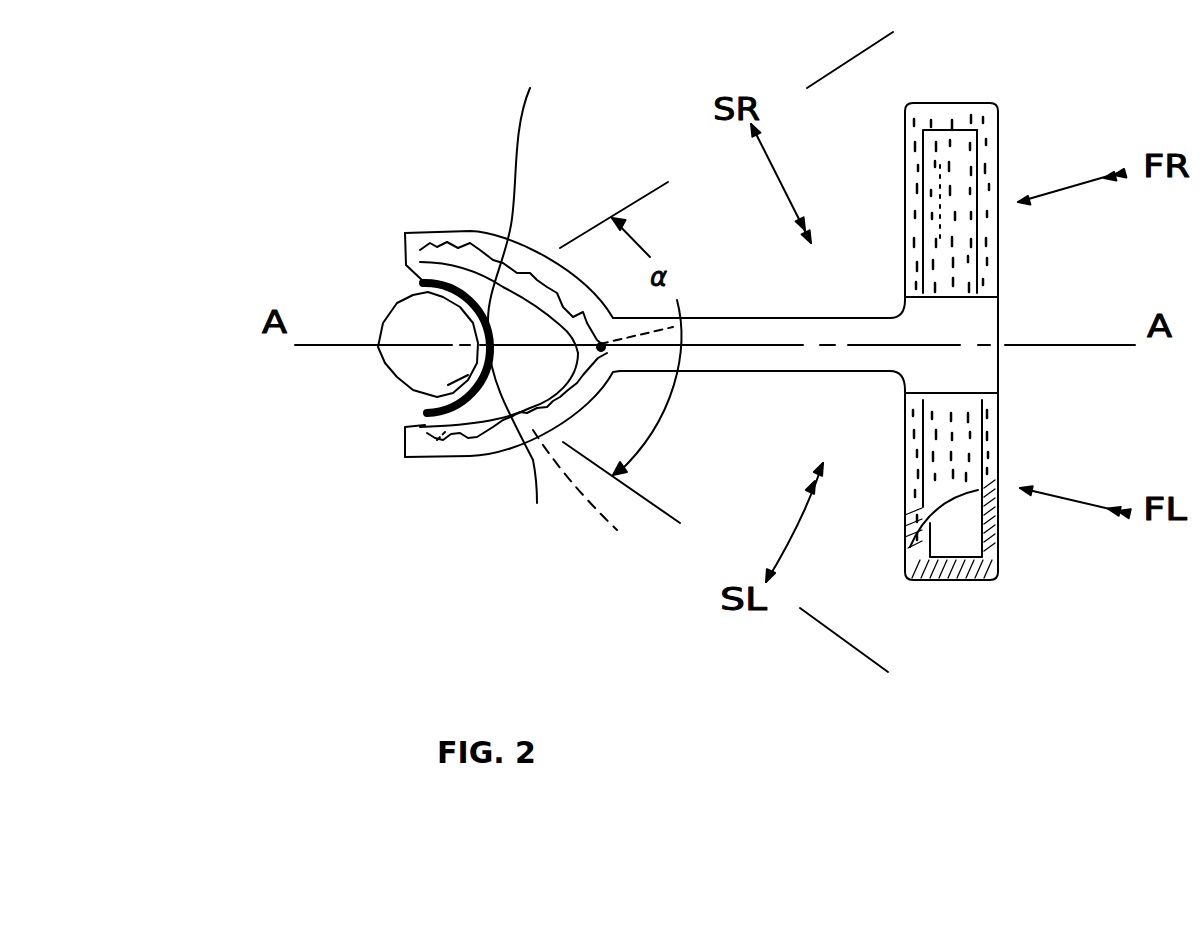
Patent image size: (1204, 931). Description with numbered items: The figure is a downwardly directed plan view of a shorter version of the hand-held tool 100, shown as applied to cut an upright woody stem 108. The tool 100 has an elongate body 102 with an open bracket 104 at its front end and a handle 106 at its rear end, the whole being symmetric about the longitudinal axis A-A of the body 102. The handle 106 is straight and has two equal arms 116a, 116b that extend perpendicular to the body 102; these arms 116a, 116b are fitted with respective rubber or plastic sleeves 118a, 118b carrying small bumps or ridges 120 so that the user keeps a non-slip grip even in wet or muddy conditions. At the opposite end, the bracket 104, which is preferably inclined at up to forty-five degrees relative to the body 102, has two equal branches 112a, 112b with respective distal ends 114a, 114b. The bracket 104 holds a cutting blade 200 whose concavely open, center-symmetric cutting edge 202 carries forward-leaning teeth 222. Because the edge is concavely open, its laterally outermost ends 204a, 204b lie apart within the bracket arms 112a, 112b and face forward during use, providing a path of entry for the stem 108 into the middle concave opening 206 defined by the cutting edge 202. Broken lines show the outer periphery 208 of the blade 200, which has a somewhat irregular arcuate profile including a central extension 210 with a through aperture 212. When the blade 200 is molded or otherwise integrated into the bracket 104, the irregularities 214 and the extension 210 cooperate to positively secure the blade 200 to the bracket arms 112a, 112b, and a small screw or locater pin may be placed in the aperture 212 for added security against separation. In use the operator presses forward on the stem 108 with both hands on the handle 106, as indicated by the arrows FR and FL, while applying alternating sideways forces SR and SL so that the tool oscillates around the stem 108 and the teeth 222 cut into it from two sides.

The hand-held tool 100 is at (497, 172).
The elongate body 102 is at (823, 318).
The open bracket 104 is at (600, 400).
The handle 106 is at (983, 319).
The upright woody stem 108 is at (387, 308).
The first bracket branch 112a is at (477, 240).
The second bracket branch 112b is at (483, 455).
The first distal end 114a is at (405, 232).
The second distal end 114b is at (405, 455).
The first handle arm 116a is at (1003, 171).
The second handle arm 116b is at (958, 528).
The first sleeve 118a is at (1000, 134).
The second sleeve 118b is at (997, 557).
The bumps or ridges 120 is at (968, 213).
The cutting blade 200 is at (527, 317).
The cutting edge 202 is at (544, 197).
The first outermost end of cutting edge 204a is at (413, 270).
The second outermost end of cutting edge 204b is at (420, 416).
The concave opening 206 is at (430, 405).
The outer periphery of blade 208 is at (437, 440).
The central extension 210 is at (695, 317).
The through aperture 212 is at (603, 348).
The irregularities 214 is at (600, 502).
The forward-leaning teeth 222 is at (536, 446).